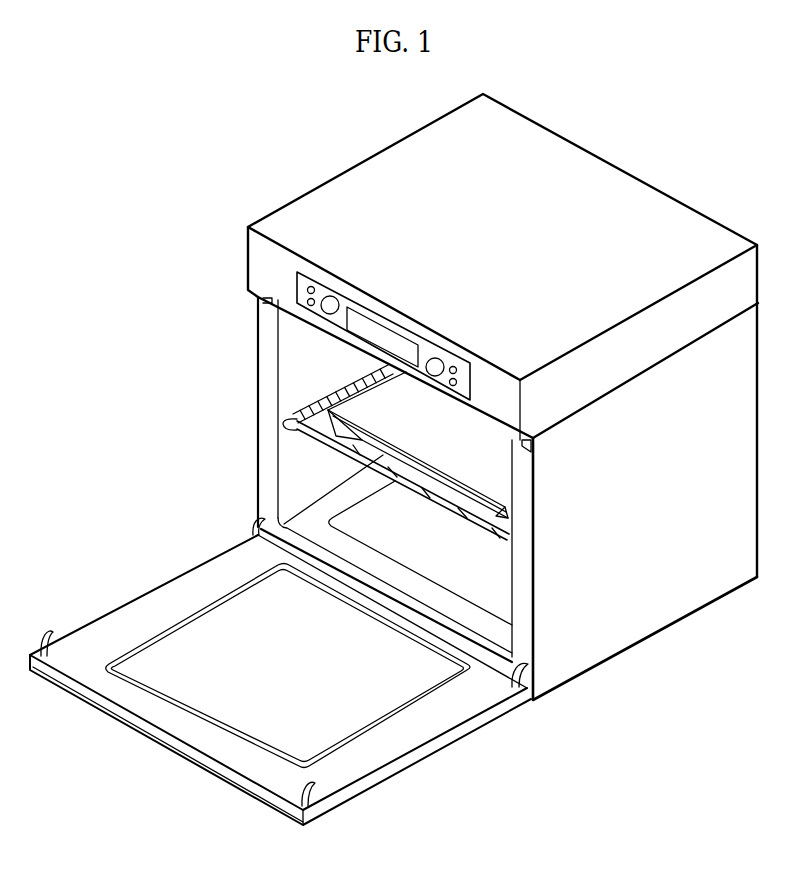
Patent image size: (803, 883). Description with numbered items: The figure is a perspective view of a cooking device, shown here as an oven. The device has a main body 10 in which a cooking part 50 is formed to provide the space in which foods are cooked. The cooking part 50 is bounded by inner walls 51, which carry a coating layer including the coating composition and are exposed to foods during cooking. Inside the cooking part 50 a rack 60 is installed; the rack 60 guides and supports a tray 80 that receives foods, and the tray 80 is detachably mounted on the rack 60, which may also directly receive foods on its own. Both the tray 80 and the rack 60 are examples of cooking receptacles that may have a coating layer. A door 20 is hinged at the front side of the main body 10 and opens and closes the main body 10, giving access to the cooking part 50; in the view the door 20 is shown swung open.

The main body 10 is at (657, 607).
The door 20 is at (147, 602).
The cooking part 50 is at (317, 371).
The inner walls 51 is at (293, 330).
The rack 60 is at (300, 440).
The tray 80 is at (340, 447).